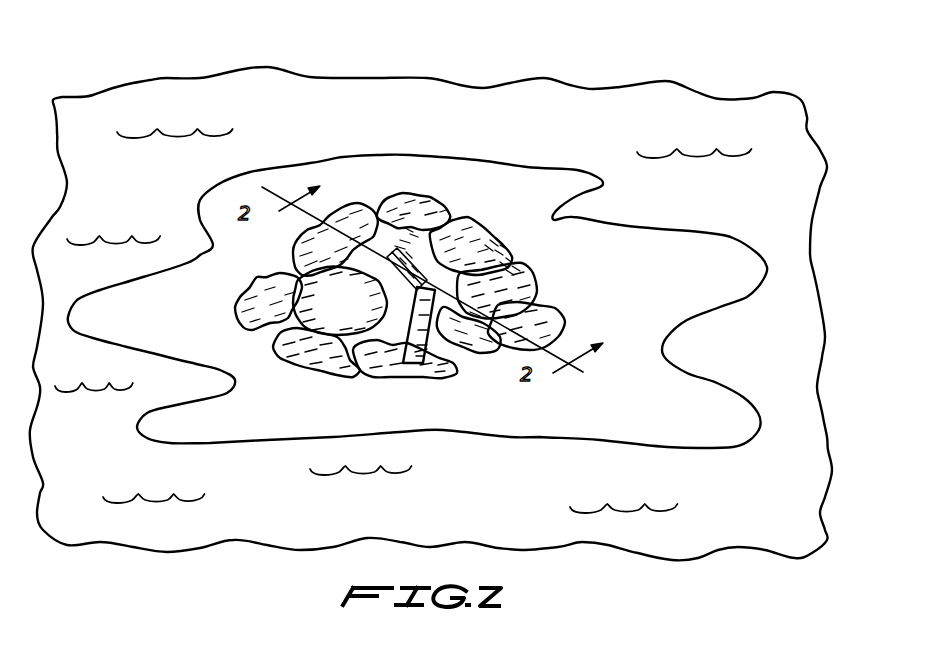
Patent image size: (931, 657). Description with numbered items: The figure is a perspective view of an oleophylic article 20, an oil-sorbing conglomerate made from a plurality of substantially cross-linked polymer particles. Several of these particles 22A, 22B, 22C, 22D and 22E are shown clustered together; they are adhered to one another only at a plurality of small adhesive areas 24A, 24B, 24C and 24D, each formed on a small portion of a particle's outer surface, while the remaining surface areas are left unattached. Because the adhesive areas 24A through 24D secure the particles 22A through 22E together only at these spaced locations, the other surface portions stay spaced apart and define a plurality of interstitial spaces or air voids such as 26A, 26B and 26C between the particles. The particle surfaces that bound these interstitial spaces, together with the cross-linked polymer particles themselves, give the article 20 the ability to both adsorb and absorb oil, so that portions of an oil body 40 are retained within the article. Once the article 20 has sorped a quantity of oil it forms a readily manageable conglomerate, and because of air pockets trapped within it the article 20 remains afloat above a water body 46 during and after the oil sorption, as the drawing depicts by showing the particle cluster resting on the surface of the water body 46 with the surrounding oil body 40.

The oleophylic article 20 is at (171, 71).
The cross-linked polymer particle 22A is at (485, 245).
The cross-linked polymer particle 22B is at (418, 290).
The cross-linked polymer particle 22C is at (395, 303).
The cross-linked polymer particle 22D is at (528, 286).
The cross-linked polymer particle 22E is at (428, 335).
The adhesive area 24A is at (490, 250).
The adhesive area 24B is at (430, 290).
The adhesive area 24C is at (412, 225).
The adhesive area 24D is at (403, 330).
The interstitial space 26A is at (505, 258).
The interstitial space 26B is at (297, 256).
The interstitial space 26C is at (470, 328).
The oil body 40 is at (673, 426).
The water body 46 is at (755, 354).